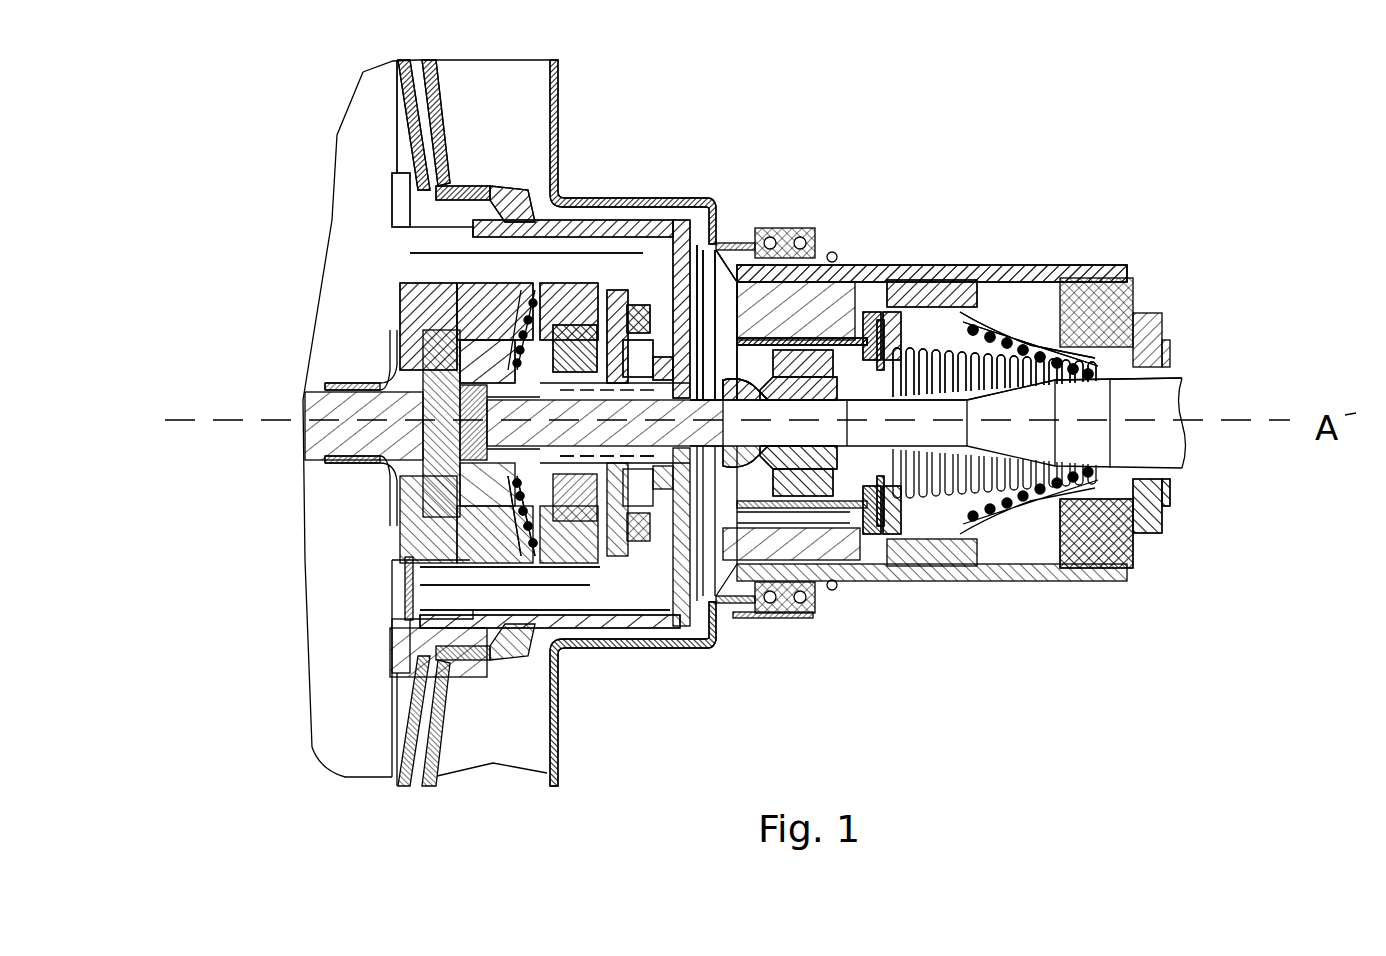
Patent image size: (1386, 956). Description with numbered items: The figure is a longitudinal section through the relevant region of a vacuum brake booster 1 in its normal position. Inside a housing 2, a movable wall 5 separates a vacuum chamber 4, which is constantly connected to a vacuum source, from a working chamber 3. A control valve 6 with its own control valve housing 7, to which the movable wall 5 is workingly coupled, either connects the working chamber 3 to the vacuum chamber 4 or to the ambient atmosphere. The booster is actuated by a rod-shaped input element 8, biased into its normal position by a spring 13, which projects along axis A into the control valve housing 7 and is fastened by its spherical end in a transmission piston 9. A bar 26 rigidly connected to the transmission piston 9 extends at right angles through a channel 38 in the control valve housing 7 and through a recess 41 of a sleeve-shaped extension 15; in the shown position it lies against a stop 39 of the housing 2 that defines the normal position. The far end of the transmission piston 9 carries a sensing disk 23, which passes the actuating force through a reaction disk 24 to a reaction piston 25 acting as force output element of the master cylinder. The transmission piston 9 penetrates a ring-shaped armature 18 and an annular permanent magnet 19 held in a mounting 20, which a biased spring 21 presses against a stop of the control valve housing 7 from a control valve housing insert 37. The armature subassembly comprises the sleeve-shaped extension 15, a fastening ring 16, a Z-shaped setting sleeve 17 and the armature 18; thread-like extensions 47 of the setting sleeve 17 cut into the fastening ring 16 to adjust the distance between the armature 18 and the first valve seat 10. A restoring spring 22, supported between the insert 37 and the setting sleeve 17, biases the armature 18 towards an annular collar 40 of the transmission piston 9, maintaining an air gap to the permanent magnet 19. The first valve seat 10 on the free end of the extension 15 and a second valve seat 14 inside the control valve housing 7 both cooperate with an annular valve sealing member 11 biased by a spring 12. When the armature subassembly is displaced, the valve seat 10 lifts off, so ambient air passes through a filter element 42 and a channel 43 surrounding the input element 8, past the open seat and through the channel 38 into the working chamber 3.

The vacuum brake booster 1 is at (687, 75).
The housing 2 is at (558, 78).
The working chamber 3 is at (492, 90).
The vacuum chamber 4 is at (372, 116).
The movable wall 5 is at (427, 127).
The control valve 6 is at (1112, 198).
The control valve housing 7 is at (1103, 272).
The input element 8 is at (1160, 402).
The transmission piston 9 is at (800, 480).
The first valve seat 10 is at (833, 480).
The valve sealing member 11 is at (880, 320).
The spring 12 is at (977, 323).
The spring 13 is at (1033, 353).
The second valve seat 14 is at (860, 290).
The sleeve-shaped extension 15 is at (835, 300).
The fastening ring 16 is at (700, 280).
The setting sleeve 17 is at (650, 327).
The armature 18 is at (637, 327).
The permanent magnet 19 is at (593, 327).
The mounting 20 is at (563, 327).
The spring 21 is at (530, 545).
The restoring spring 22 is at (577, 475).
The sensing disk 23 is at (395, 372).
The reaction disk 24 is at (392, 410).
The reaction piston 25 is at (340, 435).
The bar 26 is at (740, 245).
The control valve housing insert 37 is at (390, 560).
The channel 38 is at (760, 232).
The stop 39 is at (720, 220).
The annular collar 40 is at (700, 505).
The recess 41 is at (697, 327).
The filter element 42 is at (1131, 512).
The channel 43 is at (1084, 535).
The extensions 47 is at (660, 512).